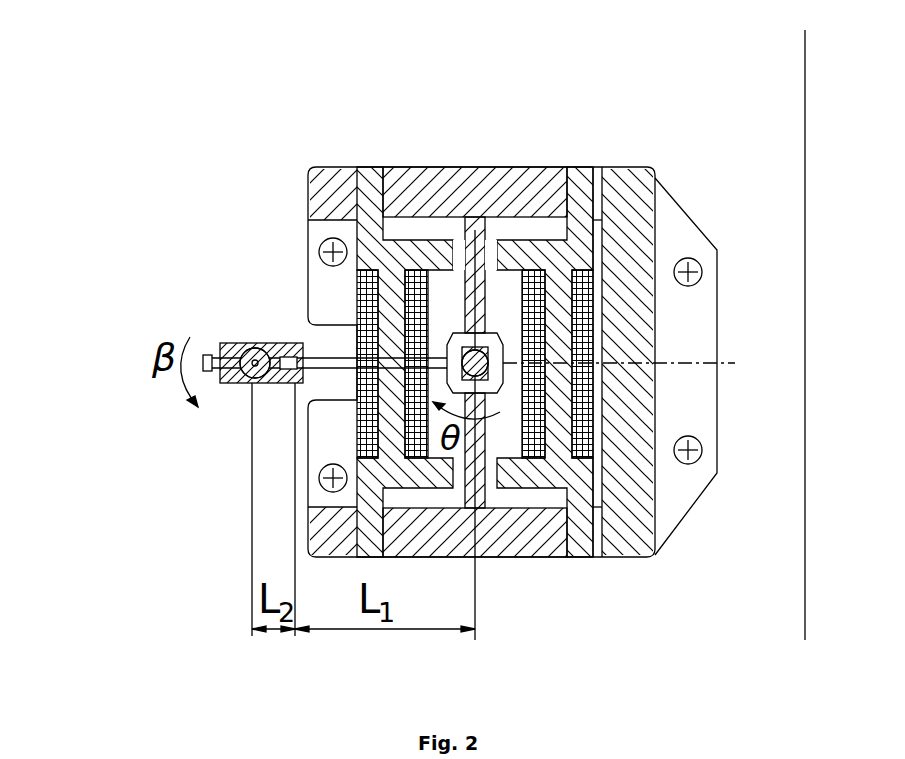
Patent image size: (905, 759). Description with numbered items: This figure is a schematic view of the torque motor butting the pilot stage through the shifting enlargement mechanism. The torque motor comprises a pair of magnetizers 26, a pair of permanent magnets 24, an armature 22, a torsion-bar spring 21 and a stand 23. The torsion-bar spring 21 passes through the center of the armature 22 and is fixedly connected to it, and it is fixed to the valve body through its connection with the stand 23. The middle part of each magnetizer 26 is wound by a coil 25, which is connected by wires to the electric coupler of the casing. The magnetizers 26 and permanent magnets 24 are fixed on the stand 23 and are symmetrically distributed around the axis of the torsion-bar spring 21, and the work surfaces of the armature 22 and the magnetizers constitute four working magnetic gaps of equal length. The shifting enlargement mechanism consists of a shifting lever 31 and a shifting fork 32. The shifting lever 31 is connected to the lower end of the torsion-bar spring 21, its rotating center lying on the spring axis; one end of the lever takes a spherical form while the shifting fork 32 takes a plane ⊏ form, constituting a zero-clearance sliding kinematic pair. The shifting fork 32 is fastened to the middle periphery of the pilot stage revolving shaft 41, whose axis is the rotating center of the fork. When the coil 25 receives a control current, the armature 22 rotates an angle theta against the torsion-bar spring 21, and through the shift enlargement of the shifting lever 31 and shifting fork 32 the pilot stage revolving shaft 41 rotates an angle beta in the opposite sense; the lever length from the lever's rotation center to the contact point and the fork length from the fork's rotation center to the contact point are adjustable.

The torsion-bar spring 21 is at (470, 337).
The armature 22 is at (543, 303).
The stand 23 is at (615, 300).
The permanent magnet 24 is at (553, 193).
The coil 25 is at (362, 322).
The magnetizer 26 is at (394, 262).
The shifting lever 31 is at (337, 358).
The shifting fork 32 is at (260, 343).
The pilot stage revolving shaft 41 is at (237, 383).